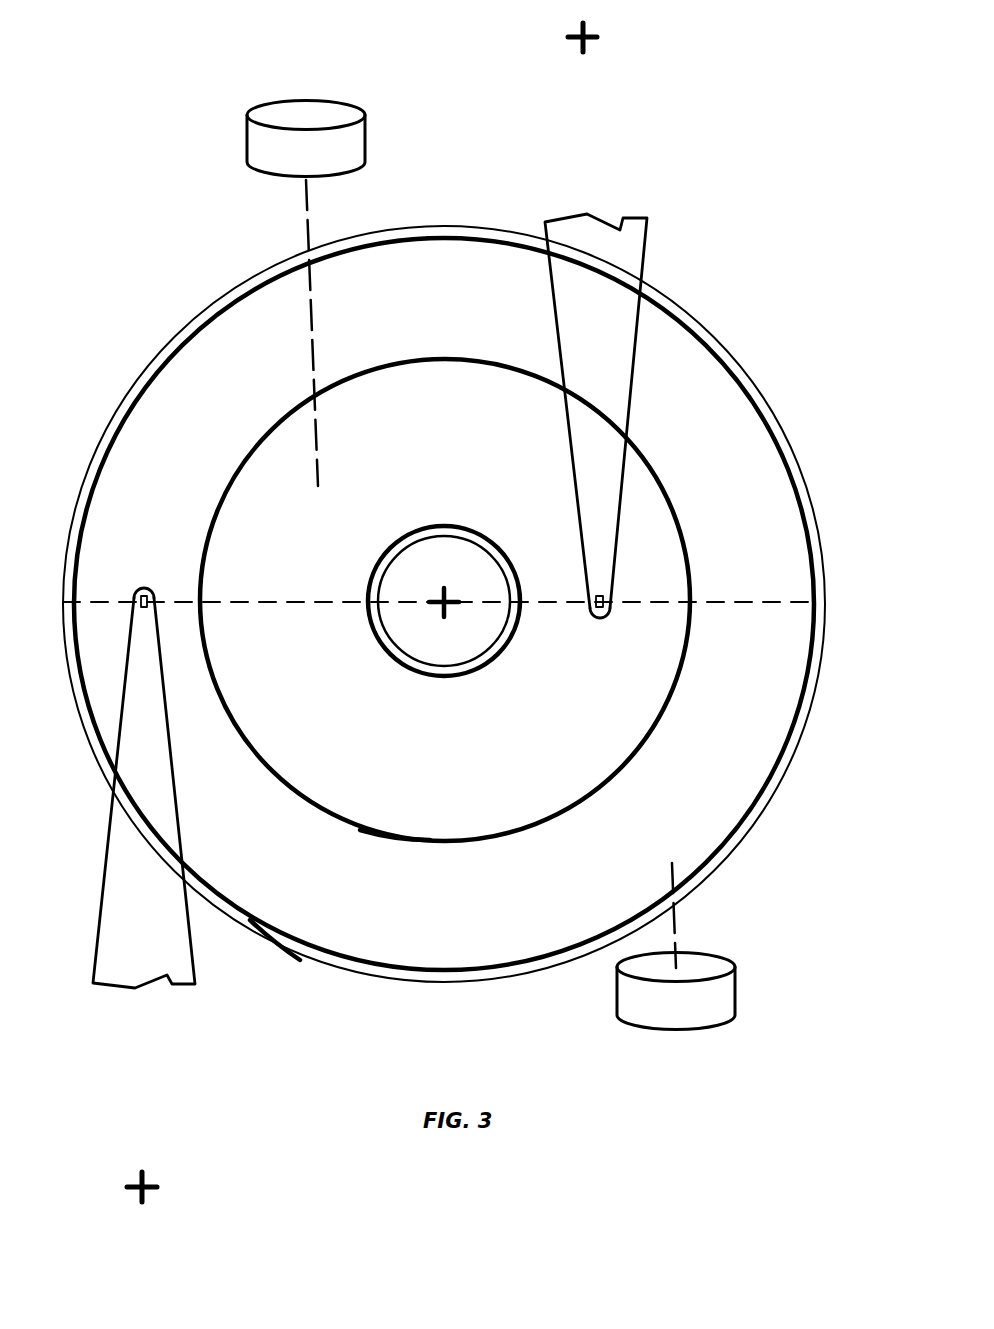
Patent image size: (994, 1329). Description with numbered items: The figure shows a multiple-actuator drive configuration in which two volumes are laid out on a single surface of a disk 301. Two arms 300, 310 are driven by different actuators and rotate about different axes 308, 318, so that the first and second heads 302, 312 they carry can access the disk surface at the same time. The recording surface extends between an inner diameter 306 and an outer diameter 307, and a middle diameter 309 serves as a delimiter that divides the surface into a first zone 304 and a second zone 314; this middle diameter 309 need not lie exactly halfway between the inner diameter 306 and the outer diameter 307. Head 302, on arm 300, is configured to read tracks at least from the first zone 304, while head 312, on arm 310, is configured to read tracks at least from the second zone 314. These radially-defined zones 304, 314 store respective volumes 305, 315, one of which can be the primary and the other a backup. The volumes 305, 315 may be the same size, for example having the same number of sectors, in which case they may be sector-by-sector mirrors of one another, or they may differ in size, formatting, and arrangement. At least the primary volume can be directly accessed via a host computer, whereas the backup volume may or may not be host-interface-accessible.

The arm 300 is at (97, 951).
The disk 301 is at (455, 976).
The first head 302 is at (144, 585).
The first zone 304 is at (325, 917).
The volume 305 is at (723, 1003).
The inner diameter 306 is at (441, 678).
The outer diameter 307 is at (385, 963).
The axis 308 is at (127, 1187).
The middle diameter 309 is at (490, 841).
The arm 310 is at (649, 240).
The second head 312 is at (600, 620).
The second zone 314 is at (395, 808).
The volume 315 is at (336, 101).
The axis 318 is at (567, 37).